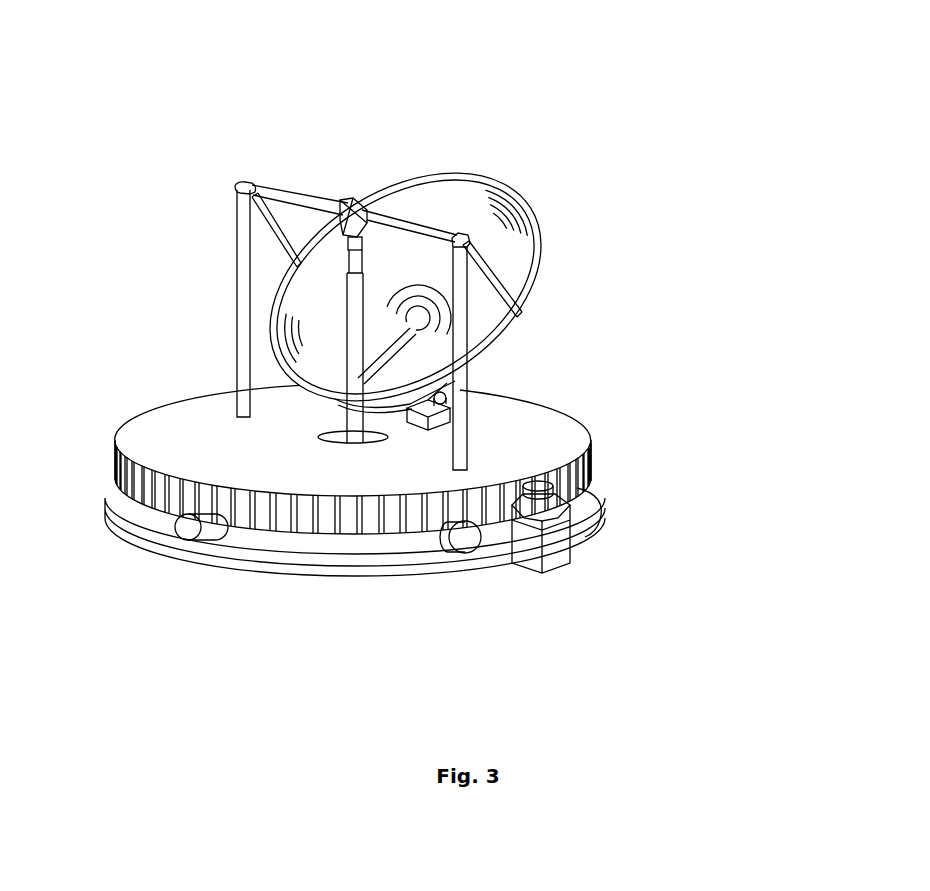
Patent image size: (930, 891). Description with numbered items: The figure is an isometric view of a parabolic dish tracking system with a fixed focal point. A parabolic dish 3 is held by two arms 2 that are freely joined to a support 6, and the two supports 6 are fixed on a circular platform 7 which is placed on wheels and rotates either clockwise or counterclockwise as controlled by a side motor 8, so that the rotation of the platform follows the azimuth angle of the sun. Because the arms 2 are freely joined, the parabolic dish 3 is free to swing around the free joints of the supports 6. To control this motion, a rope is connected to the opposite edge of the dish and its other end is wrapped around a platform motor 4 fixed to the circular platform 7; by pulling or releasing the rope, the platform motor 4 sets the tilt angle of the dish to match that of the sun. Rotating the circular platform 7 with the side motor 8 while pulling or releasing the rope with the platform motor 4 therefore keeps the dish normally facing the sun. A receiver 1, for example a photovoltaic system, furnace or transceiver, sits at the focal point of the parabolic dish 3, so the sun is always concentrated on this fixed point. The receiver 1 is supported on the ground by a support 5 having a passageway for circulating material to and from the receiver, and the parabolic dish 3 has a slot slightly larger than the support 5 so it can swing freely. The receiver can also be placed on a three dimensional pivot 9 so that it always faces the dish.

The receiver 1 is at (348, 207).
The arms 2 is at (492, 280).
The parabolic dish 3 is at (502, 187).
The platform motor 4 is at (437, 415).
The support 5 is at (355, 290).
The support 6 is at (462, 450).
The circular platform 7 is at (587, 448).
The side motor 8 is at (550, 518).
The three dimensional pivot 9 is at (352, 240).